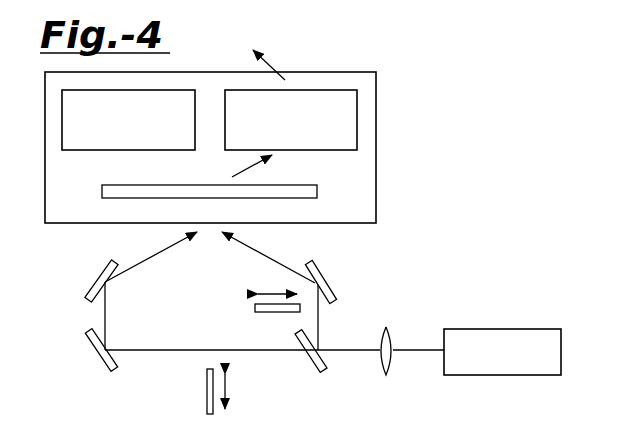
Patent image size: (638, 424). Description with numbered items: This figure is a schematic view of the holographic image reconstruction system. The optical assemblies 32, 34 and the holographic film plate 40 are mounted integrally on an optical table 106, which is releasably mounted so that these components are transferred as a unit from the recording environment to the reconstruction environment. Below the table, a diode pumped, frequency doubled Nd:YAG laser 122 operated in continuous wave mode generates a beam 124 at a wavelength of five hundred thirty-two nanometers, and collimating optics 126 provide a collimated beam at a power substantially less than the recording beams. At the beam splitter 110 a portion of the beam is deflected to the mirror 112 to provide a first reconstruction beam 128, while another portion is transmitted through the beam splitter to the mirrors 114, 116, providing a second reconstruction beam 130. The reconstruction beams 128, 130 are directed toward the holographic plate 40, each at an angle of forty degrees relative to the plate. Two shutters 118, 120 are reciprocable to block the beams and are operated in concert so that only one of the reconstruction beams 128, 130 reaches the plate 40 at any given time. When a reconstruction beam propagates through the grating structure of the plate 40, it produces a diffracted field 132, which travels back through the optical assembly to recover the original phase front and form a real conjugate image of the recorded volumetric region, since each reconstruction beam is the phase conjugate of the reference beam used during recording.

The optical assembly 32 is at (62, 127).
The optical assembly 34 is at (357, 117).
The holographic film plate 40 is at (132, 185).
The optical table 106 is at (376, 195).
The beam splitter 110 is at (310, 371).
The mirror 112 is at (332, 285).
The mirror 114 is at (102, 362).
The mirror 116 is at (91, 289).
The shutter 118 is at (265, 313).
The shutter 120 is at (206, 387).
The laser 122 is at (515, 375).
The beam 124 is at (411, 350).
The collimating optics 126 is at (389, 372).
The reconstruction beam 128 is at (280, 264).
The reconstruction beam 130 is at (142, 263).
The diffracted field 132 is at (250, 166).